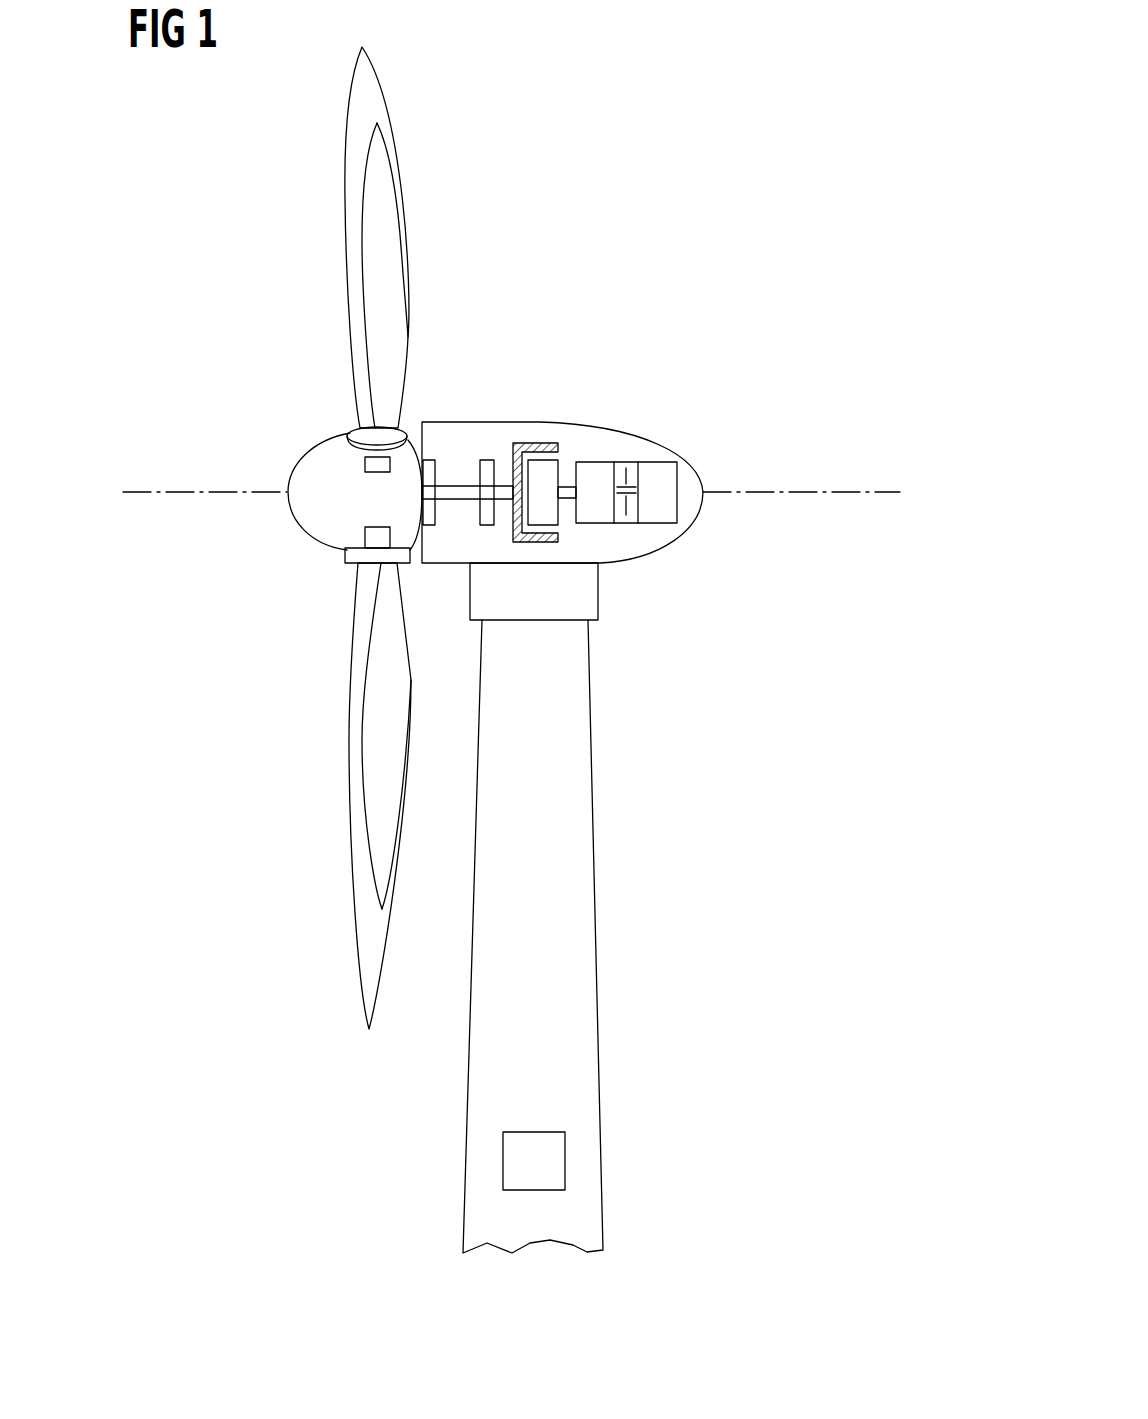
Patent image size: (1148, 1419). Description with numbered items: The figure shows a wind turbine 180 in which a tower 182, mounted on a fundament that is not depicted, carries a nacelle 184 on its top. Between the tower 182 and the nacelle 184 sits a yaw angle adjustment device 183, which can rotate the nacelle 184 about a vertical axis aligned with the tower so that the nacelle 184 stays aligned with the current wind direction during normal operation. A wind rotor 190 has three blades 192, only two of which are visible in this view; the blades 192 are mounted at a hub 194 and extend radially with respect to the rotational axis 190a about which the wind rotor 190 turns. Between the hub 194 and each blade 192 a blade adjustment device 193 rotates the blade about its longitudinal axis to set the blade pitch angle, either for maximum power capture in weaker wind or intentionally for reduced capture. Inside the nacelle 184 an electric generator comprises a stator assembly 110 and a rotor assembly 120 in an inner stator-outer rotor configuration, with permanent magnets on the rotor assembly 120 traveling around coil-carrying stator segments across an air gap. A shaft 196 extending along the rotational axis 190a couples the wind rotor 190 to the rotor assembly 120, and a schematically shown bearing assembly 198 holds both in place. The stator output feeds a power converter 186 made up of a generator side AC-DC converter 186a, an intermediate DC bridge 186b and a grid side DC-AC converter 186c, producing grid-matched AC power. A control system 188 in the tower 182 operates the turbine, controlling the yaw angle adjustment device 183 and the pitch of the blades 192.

The wind turbine 180 is at (791, 244).
The tower 182 is at (586, 777).
The yaw angle adjustment device 183 is at (479, 590).
The nacelle 184 is at (705, 518).
The power converter 186 is at (642, 440).
The generator side AC-DC converter 186a is at (596, 524).
The intermediate DC bridge 186b is at (626, 524).
The grid side DC-AC converter 186c is at (658, 524).
The control system 188 is at (530, 1132).
The wind rotor 190 is at (246, 388).
The rotational axis 190a is at (144, 492).
The blades 192 is at (350, 226).
The blade adjustment device 193 is at (350, 432).
The hub 194 is at (305, 513).
The shaft 196 is at (463, 494).
The bearing assembly 198 is at (487, 460).
The stator assembly 110 is at (552, 465).
The rotor assembly 120 is at (540, 443).